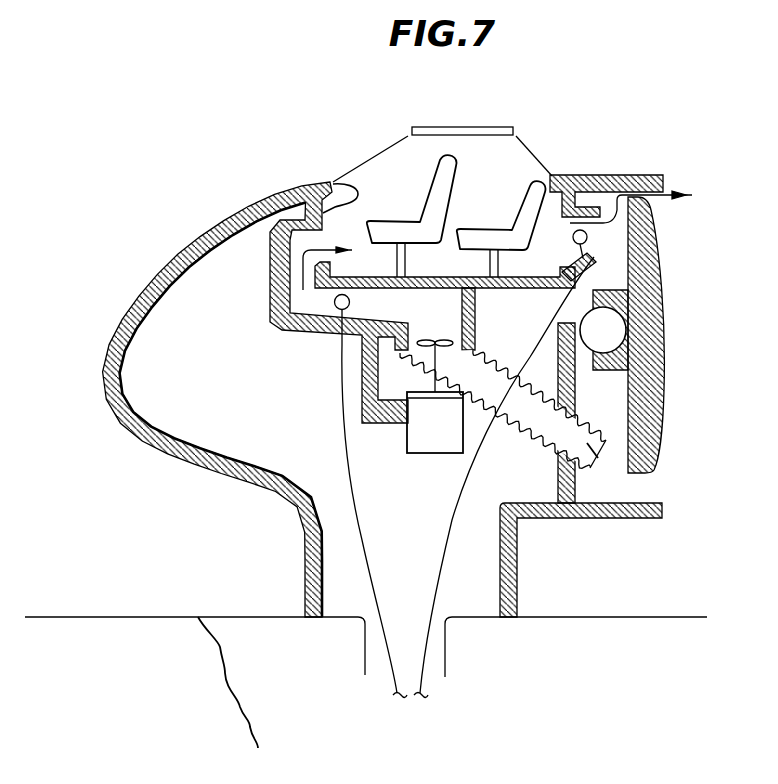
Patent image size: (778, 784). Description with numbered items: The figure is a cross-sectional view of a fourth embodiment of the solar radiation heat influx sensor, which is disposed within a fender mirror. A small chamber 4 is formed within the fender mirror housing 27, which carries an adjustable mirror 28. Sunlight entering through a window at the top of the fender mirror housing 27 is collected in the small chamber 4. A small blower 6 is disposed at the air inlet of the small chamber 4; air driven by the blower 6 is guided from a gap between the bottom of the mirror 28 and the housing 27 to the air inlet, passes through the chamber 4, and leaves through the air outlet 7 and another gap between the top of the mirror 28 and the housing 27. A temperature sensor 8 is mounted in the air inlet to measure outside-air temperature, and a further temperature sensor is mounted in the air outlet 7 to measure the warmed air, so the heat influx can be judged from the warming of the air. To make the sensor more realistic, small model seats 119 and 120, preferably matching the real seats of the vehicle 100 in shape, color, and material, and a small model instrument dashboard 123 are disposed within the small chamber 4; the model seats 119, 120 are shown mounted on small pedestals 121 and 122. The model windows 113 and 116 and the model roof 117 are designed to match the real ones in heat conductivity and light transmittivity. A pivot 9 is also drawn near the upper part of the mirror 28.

The small chamber 4 is at (517, 150).
The small blower 6 is at (417, 455).
The air outlet 7 is at (600, 250).
The temperature sensor 8 is at (336, 309).
The pivot pin 9 is at (589, 238).
The fender mirror housing 27 is at (180, 440).
The adjustable mirror 28 is at (655, 327).
The vehicle 100 is at (648, 627).
The model window 113 is at (370, 156).
The model window 116 is at (534, 165).
The model roof 117 is at (455, 127).
The model seat 119 is at (443, 182).
The model seat 120 is at (537, 212).
The first stem 121 is at (400, 263).
The second stem 122 is at (499, 263).
The model instrument dashboard 123 is at (358, 190).